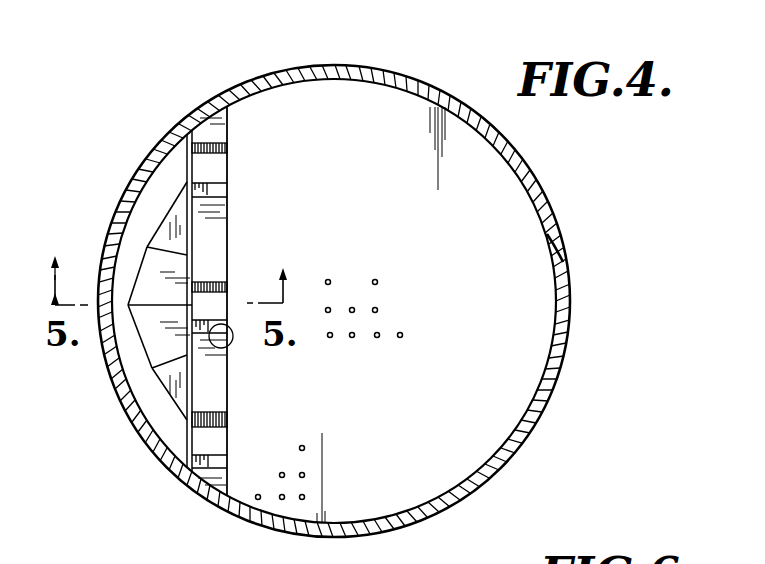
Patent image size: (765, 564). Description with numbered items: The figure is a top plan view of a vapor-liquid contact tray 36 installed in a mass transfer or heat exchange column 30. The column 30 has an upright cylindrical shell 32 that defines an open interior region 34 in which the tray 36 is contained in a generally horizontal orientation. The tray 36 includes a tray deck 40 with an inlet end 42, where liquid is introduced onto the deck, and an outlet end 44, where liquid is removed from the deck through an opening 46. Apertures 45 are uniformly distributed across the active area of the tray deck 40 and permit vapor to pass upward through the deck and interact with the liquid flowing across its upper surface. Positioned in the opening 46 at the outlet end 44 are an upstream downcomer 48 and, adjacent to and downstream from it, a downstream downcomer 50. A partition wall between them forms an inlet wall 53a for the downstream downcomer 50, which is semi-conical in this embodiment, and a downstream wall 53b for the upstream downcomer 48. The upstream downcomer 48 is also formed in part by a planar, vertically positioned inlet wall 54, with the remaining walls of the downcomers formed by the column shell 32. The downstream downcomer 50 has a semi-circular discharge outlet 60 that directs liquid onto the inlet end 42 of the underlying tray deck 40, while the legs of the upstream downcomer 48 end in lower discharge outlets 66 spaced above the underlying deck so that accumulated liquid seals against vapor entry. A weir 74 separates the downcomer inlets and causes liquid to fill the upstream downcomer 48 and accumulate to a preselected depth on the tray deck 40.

The mass transfer or heat exchange column 30 is at (546, 181).
The upright cylindrical shell 32 is at (580, 291).
The open interior region 34 is at (381, 96).
The vapor-liquid contact tray 36 is at (481, 150).
The tray deck 40 is at (394, 518).
The inlet end 42 is at (539, 253).
The outlet end 44 is at (257, 100).
The apertures 45 is at (379, 336).
The opening 46 is at (160, 174).
The upstream downcomer 48 is at (218, 447).
The downstream downcomer 50 is at (158, 424).
The inlet wall 53a is at (140, 268).
The downstream wall 53b is at (193, 303).
The inlet wall 54 is at (231, 350).
The discharge outlet 60 is at (116, 372).
The lower discharge outlet 66 is at (218, 183).
The weir 74 is at (185, 178).